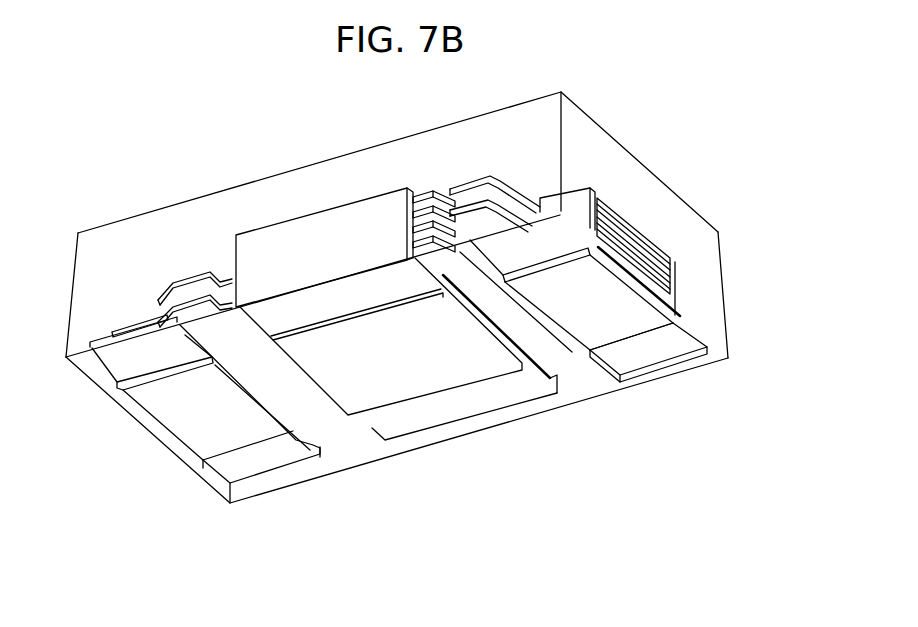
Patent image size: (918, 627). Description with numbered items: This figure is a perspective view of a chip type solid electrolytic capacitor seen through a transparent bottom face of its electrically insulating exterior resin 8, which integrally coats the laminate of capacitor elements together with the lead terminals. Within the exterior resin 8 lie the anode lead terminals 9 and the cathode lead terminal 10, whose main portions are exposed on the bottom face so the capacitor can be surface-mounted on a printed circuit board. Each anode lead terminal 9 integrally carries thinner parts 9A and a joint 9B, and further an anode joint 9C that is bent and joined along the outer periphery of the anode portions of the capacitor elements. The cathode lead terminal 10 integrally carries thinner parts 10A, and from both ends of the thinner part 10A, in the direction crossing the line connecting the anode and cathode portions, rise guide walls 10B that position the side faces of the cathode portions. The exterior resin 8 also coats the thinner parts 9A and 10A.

The exterior resin 8 is at (648, 195).
The anode lead terminal 9 is at (190, 428).
The thinner part 9A is at (253, 468).
The joint 9B is at (677, 298).
The anode joint 9C is at (580, 202).
The cathode lead terminal 10 is at (428, 367).
The thinner part 10A is at (425, 415).
The guide wall 10B is at (318, 225).